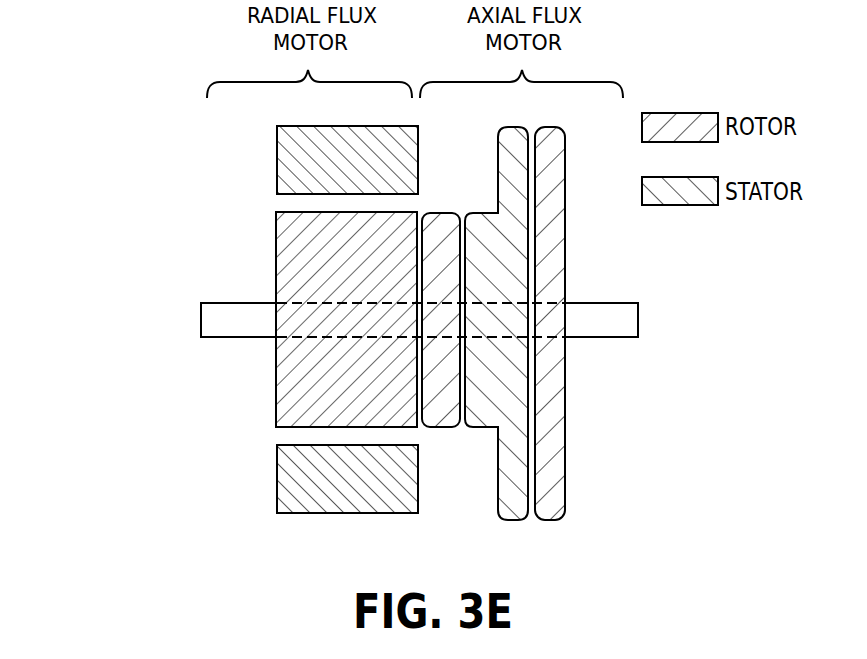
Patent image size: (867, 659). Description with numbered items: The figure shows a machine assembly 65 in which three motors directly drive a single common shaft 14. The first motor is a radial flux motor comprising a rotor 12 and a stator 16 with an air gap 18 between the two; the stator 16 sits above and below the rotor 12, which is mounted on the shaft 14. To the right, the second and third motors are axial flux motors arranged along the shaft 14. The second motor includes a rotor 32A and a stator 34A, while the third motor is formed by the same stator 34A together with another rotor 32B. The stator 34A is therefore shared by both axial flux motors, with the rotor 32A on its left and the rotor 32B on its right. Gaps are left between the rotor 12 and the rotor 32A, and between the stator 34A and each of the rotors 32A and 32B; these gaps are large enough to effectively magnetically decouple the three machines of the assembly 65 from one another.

The rotor 12 is at (293, 254).
The common shaft 14 is at (212, 338).
The stator 16 is at (277, 145).
The air gap 18 is at (280, 200).
The rotor 32A is at (434, 214).
The rotor 32B is at (546, 127).
The stator 34A is at (510, 127).
The machine assembly 65 is at (140, 536).